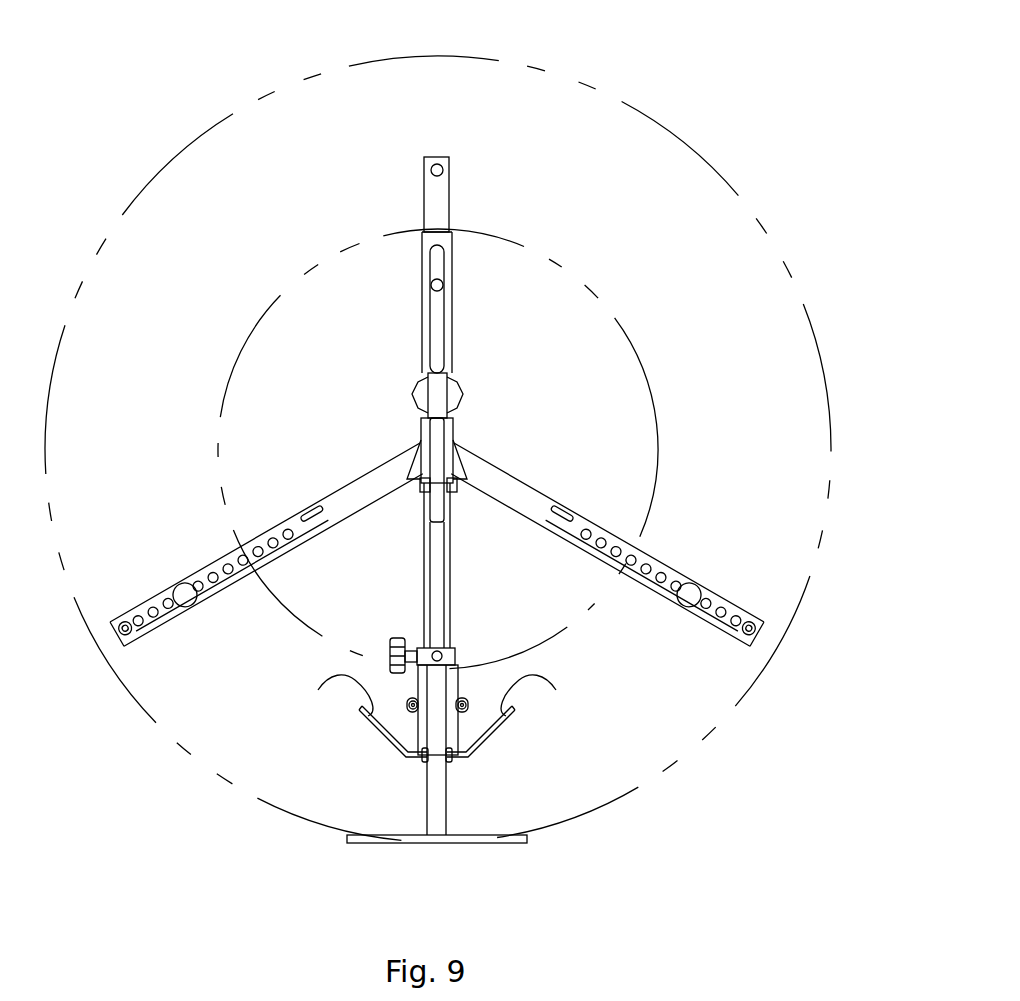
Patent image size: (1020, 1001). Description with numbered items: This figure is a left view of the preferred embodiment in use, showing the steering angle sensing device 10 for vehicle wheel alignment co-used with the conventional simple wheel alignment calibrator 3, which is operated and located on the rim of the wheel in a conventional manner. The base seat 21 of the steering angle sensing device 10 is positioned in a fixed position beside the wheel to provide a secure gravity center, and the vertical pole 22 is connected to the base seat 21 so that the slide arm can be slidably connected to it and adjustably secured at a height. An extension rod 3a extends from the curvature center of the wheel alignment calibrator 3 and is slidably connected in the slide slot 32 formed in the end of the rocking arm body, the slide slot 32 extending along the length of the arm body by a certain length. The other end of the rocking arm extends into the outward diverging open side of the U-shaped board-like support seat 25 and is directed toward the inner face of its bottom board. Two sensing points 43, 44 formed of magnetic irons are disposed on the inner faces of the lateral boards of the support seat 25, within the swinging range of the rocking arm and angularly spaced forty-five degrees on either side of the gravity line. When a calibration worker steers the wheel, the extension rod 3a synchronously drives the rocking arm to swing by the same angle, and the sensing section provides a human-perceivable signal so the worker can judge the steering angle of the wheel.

The wheel alignment calibrator 3 is at (506, 473).
The extension rod 3a is at (451, 441).
The steering angle sensing device 10 is at (397, 787).
The base seat 21 is at (502, 843).
The vertical pole 22 is at (425, 563).
The support seat 25 is at (497, 730).
The slide slot 32 is at (452, 500).
The sensing point 43 is at (556, 690).
The sensing point 44 is at (318, 690).